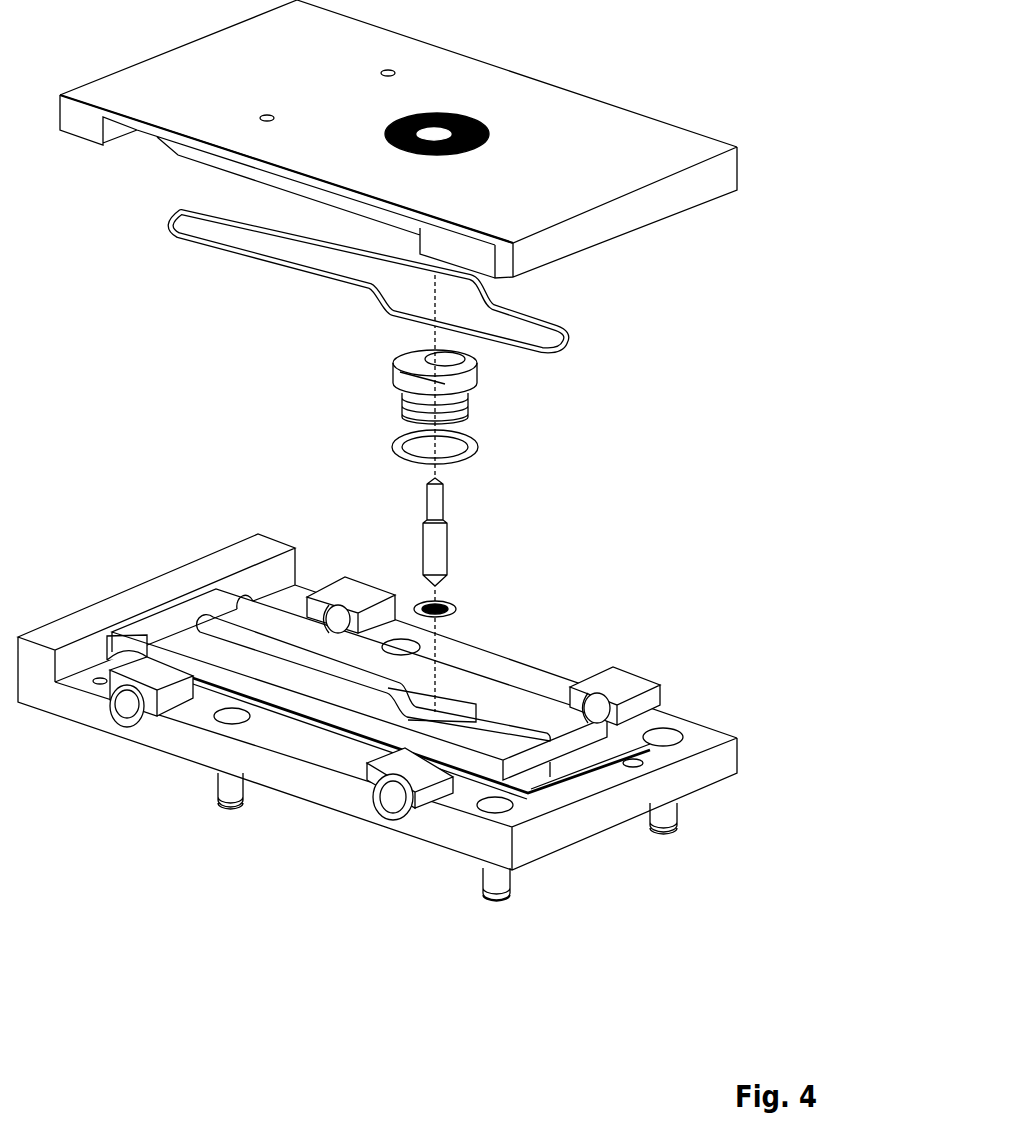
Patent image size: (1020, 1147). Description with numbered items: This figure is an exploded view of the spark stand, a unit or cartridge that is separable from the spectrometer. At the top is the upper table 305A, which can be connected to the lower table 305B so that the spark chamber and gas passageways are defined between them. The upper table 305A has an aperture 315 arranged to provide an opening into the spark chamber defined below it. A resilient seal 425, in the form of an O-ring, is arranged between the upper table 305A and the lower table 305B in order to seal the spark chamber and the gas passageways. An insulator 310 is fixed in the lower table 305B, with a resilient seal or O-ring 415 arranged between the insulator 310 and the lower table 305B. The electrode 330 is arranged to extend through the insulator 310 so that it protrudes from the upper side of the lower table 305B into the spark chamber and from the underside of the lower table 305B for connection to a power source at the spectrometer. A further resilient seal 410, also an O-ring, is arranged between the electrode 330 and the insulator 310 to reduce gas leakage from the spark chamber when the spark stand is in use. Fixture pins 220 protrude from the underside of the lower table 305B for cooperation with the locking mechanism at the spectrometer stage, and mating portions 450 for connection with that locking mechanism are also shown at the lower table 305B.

The upper table 305A is at (653, 141).
The aperture 315 is at (484, 116).
The resilient seal 425 is at (570, 322).
The insulator 310 is at (492, 378).
The O-ring 415 is at (488, 446).
The electrode 330 is at (444, 549).
The resilient seal 410 is at (464, 608).
The lower table 305B is at (720, 730).
The mating portions 450 is at (126, 708).
The fixture pins 220 is at (478, 901).